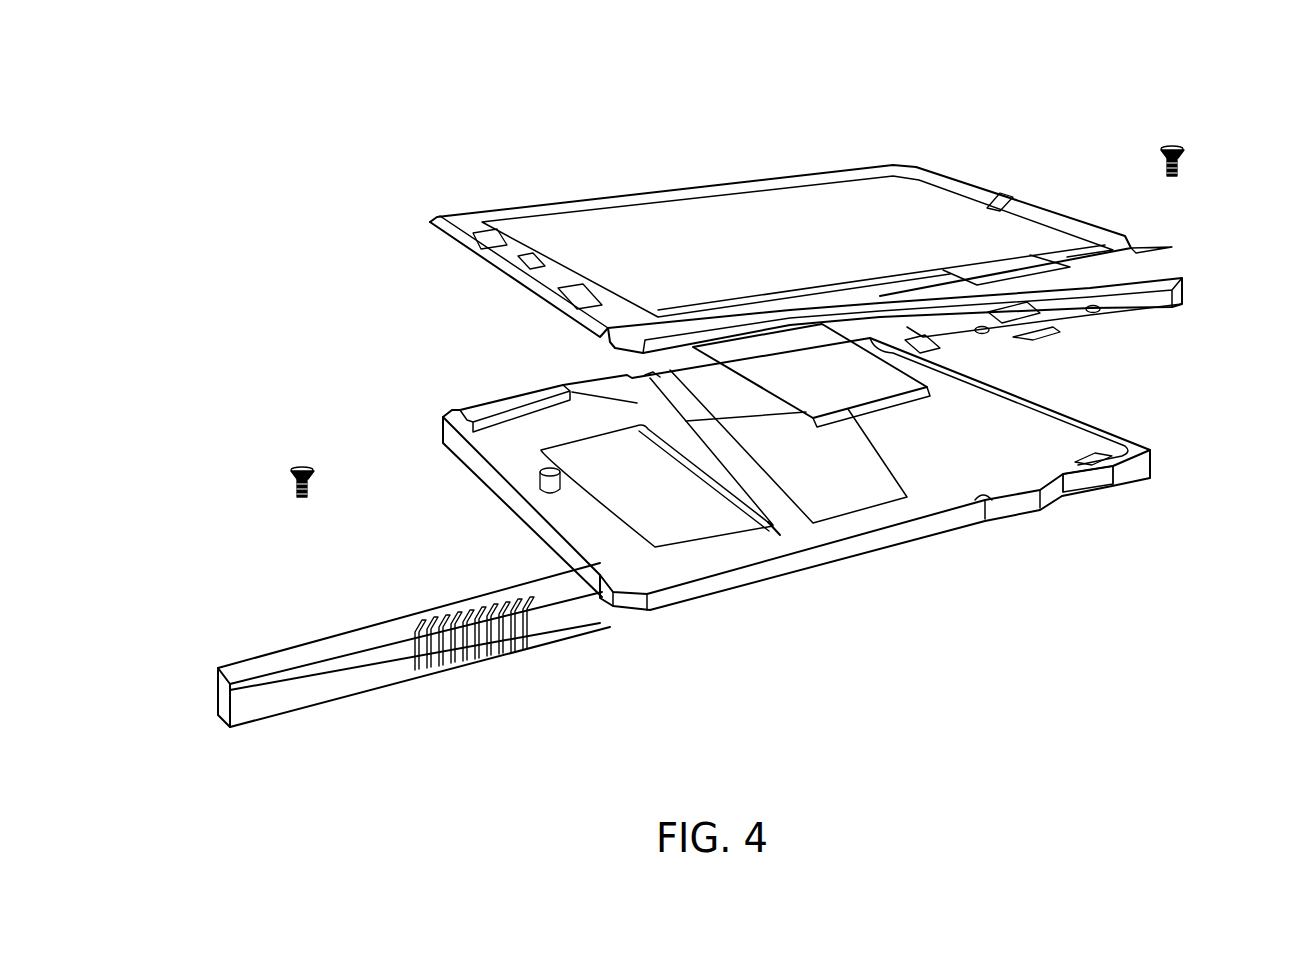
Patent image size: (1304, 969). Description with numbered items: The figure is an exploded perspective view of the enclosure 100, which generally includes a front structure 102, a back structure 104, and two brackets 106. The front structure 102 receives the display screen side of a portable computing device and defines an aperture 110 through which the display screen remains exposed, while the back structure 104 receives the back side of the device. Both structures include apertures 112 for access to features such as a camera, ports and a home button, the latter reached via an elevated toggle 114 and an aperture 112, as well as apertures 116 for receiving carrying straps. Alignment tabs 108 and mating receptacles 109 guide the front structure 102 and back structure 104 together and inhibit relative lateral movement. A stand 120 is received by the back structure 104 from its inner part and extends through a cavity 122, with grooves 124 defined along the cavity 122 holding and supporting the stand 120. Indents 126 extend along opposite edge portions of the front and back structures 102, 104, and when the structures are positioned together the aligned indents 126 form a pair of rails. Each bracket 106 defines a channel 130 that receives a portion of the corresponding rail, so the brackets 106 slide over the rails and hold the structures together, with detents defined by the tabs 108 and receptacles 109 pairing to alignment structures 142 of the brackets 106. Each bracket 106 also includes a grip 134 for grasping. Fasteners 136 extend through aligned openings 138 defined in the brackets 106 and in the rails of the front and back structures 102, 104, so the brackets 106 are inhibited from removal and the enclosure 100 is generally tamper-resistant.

The enclosure 100 is at (505, 124).
The front structure 102 is at (680, 192).
The back structure 104 is at (1152, 452).
The bracket 106 is at (692, 533).
The alignment tab 108 is at (988, 504).
The mating receptacle 109 is at (943, 273).
The aperture 110 is at (765, 196).
The aperture 112 is at (1003, 200).
The elevated toggle 114 is at (558, 470).
The aperture 116 is at (470, 242).
The stand 120 is at (905, 409).
The cavity 122 is at (873, 508).
The groove 124 is at (690, 412).
The indent 126 is at (995, 273).
The channel 130 is at (1175, 306).
The grip 134 is at (470, 666).
The fastener 136 is at (1186, 158).
The opening 138 is at (843, 168).
The alignment structure 142 is at (1095, 313).